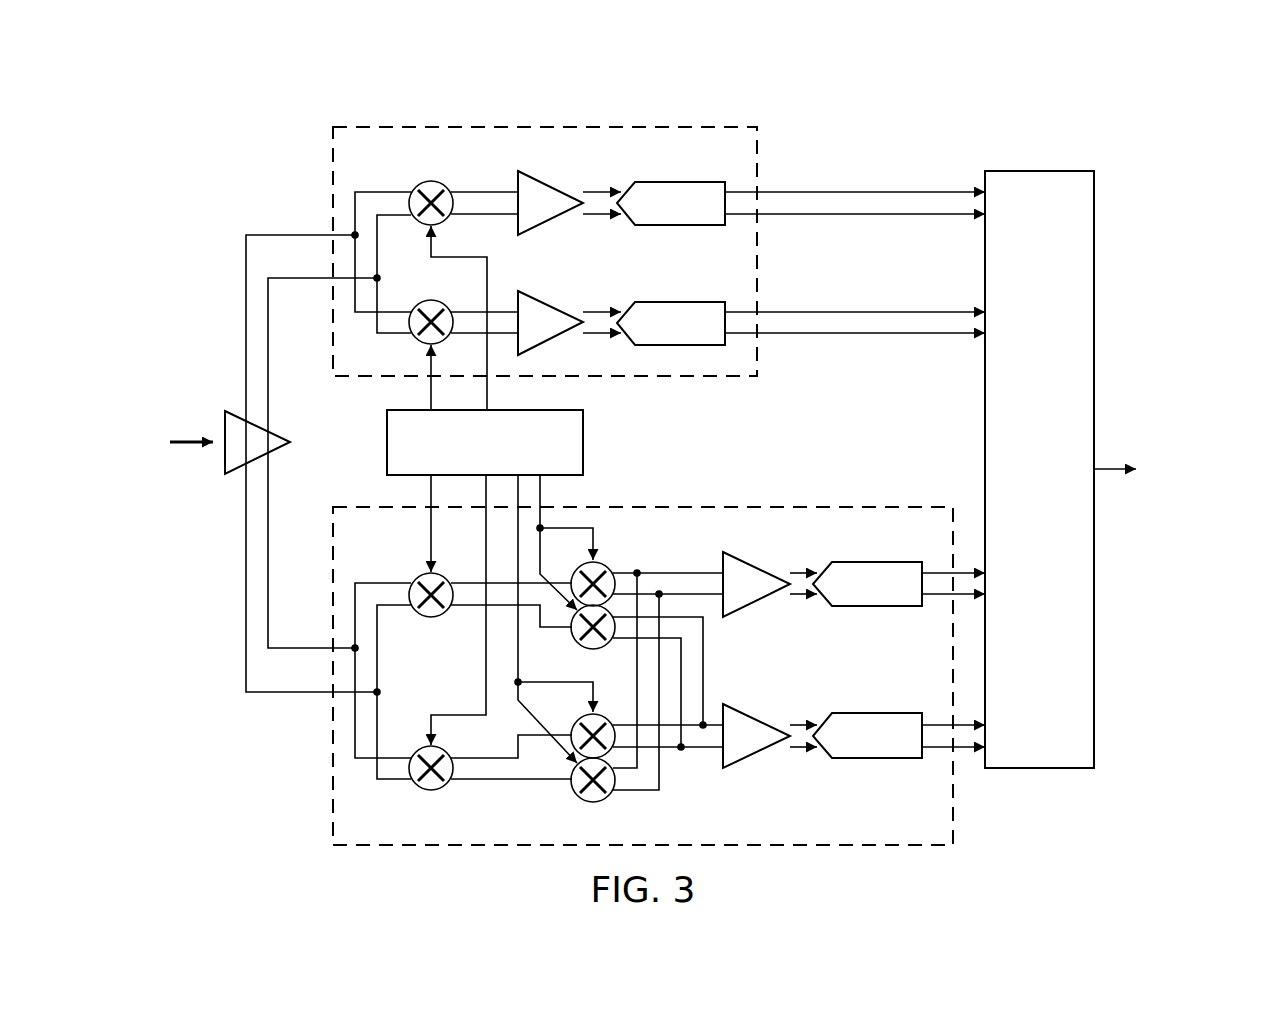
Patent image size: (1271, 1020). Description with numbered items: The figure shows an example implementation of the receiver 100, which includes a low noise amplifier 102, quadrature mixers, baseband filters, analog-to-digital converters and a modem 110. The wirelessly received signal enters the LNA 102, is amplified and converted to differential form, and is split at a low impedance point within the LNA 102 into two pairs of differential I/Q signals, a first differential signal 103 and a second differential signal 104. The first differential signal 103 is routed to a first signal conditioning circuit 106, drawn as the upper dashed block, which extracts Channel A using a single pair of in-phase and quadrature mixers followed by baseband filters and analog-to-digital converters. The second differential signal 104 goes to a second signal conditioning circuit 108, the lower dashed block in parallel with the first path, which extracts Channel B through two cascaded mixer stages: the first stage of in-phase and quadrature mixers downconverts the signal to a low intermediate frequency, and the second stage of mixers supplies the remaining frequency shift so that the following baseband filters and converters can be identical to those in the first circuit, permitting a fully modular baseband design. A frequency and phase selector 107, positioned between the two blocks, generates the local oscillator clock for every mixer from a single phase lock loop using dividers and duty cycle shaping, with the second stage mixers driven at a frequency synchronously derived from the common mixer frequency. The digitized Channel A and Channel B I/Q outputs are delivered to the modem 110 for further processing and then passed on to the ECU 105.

The receiver 100 is at (904, 91).
The low noise amplifier 102 is at (280, 448).
The first differential signal 103 is at (238, 345).
The second differential signal 104 is at (240, 567).
The ECU 105 is at (1169, 470).
The first signal conditioning circuit 106 is at (544, 124).
The frequency and phase selector 107 is at (387, 445).
The second signal conditioning circuit 108 is at (811, 849).
The modem 110 is at (1022, 501).